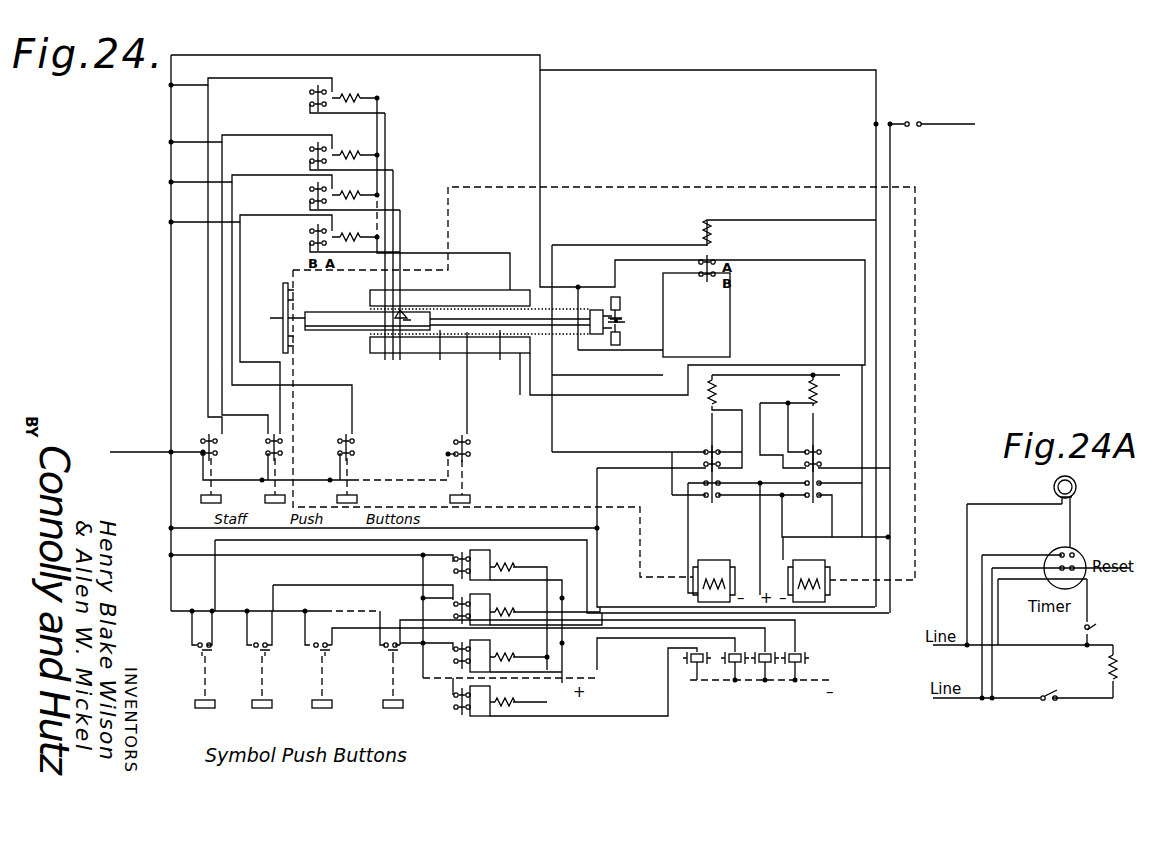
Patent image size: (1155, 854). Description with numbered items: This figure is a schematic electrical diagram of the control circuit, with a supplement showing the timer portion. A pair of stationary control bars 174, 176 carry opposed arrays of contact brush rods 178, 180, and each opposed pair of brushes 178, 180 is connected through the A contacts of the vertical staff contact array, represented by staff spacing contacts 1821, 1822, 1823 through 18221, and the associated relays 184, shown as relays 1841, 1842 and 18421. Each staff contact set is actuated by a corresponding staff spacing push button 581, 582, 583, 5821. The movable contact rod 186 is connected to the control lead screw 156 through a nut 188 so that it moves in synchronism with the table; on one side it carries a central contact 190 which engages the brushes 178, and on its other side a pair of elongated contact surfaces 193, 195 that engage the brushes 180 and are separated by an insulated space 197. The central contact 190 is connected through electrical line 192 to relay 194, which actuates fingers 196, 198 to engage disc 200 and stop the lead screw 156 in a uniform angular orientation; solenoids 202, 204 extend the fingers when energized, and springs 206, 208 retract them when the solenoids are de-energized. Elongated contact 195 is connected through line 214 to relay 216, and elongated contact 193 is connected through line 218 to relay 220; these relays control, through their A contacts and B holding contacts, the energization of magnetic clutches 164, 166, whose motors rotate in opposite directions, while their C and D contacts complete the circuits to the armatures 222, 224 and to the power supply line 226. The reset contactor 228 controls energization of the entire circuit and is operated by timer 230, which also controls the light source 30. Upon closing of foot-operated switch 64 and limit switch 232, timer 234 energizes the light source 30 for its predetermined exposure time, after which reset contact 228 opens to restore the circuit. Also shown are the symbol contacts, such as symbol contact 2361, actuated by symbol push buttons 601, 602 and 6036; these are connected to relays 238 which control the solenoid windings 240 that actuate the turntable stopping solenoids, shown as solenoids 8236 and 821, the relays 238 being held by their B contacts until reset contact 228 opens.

In FIG. 24, the relays 184 is at (300, 55).
In FIG. 24, the relay 184-1 1841 is at (277, 96).
In FIG. 24, the relay 184-2 1842 is at (281, 152).
In FIG. 24, the relay 184-21 18421 is at (285, 233).
In FIG. 24, the control lead screw 156 is at (282, 336).
In FIG. 24, the movable contact rod 186 is at (335, 318).
In FIG. 24, the stationary control bar 174 is at (376, 296).
In FIG. 24, the nut 188 is at (398, 321).
In FIG. 24, the stationary control bar 176 is at (372, 345).
In FIG. 24, the central contact 190 is at (460, 300).
In FIG. 24, the contact brush rods 178 is at (505, 310).
In FIG. 24, the elongated contact surface 195 is at (437, 358).
In FIG. 24, the elongated contact surface 193 is at (495, 358).
In FIG. 24, the contact brush rods 180 is at (526, 374).
In FIG. 24, the insulated space 197 is at (470, 395).
In FIG. 24, the electrical line 192 is at (580, 250).
In FIG. 24, the relay 194 is at (703, 230).
In FIG. 24, the solenoid 204 is at (606, 288).
In FIG. 24, the finger 196 is at (620, 306).
In FIG. 24, the spring 208 is at (625, 312).
In FIG. 24, the disc 200 is at (620, 330).
In FIG. 24, the spring 206 is at (640, 339).
In FIG. 24, the finger 198 is at (620, 346).
In FIG. 24, the solenoid 202 is at (610, 365).
In FIG. 24, the electrical line 218 is at (625, 402).
In FIG. 24, the electrical line 214 is at (570, 454).
In FIG. 24, the relay 216 is at (718, 366).
In FIG. 24, the relay 220 is at (812, 368).
In FIG. 24, the reset contactor 228 is at (914, 120).
In FIG. 24A, the reset contactor 228 is at (1075, 562).
In FIG. 24, the power supply line 226 is at (895, 470).
In FIG. 24, the vertical staff spacing contact 182-1 1821 is at (231, 284).
In FIG. 24, the vertical staff spacing contact 182-2 1822 is at (270, 311).
In FIG. 24, the vertical staff spacing contact 182-3 1823 is at (310, 331).
In FIG. 24, the vertical staff spacing contact 182-21 18221 is at (478, 466).
In FIG. 24, the staff spacing push button 58-1 581 is at (203, 494).
In FIG. 24, the staff spacing push button 58-2 582 is at (272, 494).
In FIG. 24, the staff spacing push button 58-3 583 is at (347, 494).
In FIG. 24, the staff spacing push button 58-21 5821 is at (465, 495).
In FIG. 24, the magnetic clutch 164 is at (710, 562).
In FIG. 24, the armature 222 is at (726, 572).
In FIG. 24, the magnetic clutch 166 is at (828, 605).
In FIG. 24, the armature 224 is at (812, 604).
In FIG. 24, the symbol contact 236-1 2361 is at (185, 648).
In FIG. 24, the symbol push button 60-1 601 is at (208, 695).
In FIG. 24, the symbol push button 60-2 602 is at (258, 695).
In FIG. 24, the symbol push button 60-36 6036 is at (386, 695).
In FIG. 24, the relays 238 is at (466, 720).
In FIG. 24, the turntable stopping solenoid 82-36 8236 is at (683, 662).
In FIG. 24, the turntable stopping solenoid 82-1 821 is at (808, 665).
In FIG. 24, the solenoid windings 240 is at (760, 700).
In FIG. 24A, the light source 30 is at (1077, 484).
In FIG. 24A, the timer 234 is at (1056, 552).
In FIG. 24A, the timer 230 is at (1078, 588).
In FIG. 24A, the limit switch 232 is at (1025, 672).
In FIG. 24A, the foot-operated switch 64 is at (1048, 704).